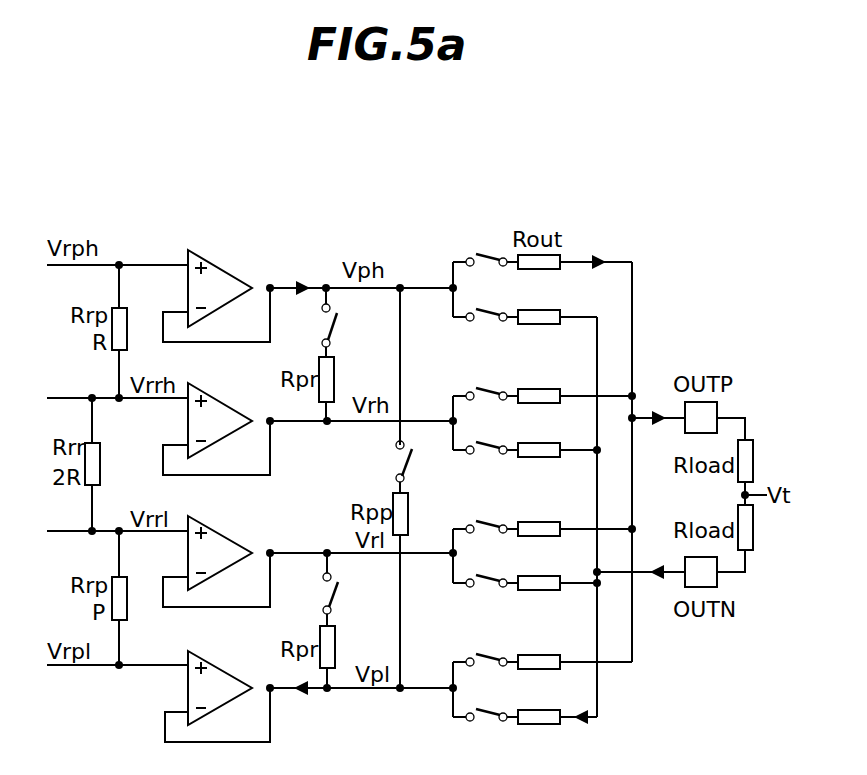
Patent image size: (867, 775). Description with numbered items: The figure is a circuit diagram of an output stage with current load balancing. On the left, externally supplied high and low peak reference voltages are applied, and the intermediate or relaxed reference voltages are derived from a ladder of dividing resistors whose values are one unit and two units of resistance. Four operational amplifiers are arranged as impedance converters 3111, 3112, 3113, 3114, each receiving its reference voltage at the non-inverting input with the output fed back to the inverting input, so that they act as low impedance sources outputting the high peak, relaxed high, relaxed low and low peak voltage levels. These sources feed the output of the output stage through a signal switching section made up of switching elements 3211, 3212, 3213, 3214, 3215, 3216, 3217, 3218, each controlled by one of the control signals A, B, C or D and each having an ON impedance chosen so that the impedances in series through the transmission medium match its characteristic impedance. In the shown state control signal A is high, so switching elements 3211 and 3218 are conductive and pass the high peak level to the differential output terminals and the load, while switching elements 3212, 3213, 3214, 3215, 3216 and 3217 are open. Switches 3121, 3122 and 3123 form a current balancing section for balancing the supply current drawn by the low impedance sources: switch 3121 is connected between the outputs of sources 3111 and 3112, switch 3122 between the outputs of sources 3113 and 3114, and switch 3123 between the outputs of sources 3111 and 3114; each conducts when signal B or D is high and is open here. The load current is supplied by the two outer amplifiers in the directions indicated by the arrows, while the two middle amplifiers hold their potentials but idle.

The impedance converter 3111 is at (202, 260).
The impedance converter 3112 is at (202, 397).
The impedance converter 3113 is at (206, 531).
The impedance converter 3114 is at (206, 665).
The switch 3121 is at (334, 312).
The switch 3122 is at (334, 575).
The switch 3123 is at (396, 452).
The switching element 3211 is at (482, 251).
The switching element 3212 is at (490, 320).
The switching element 3213 is at (484, 385).
The switching element 3214 is at (490, 453).
The switching element 3215 is at (485, 509).
The switching element 3216 is at (492, 585).
The switching element 3217 is at (485, 647).
The switching element 3218 is at (492, 723).